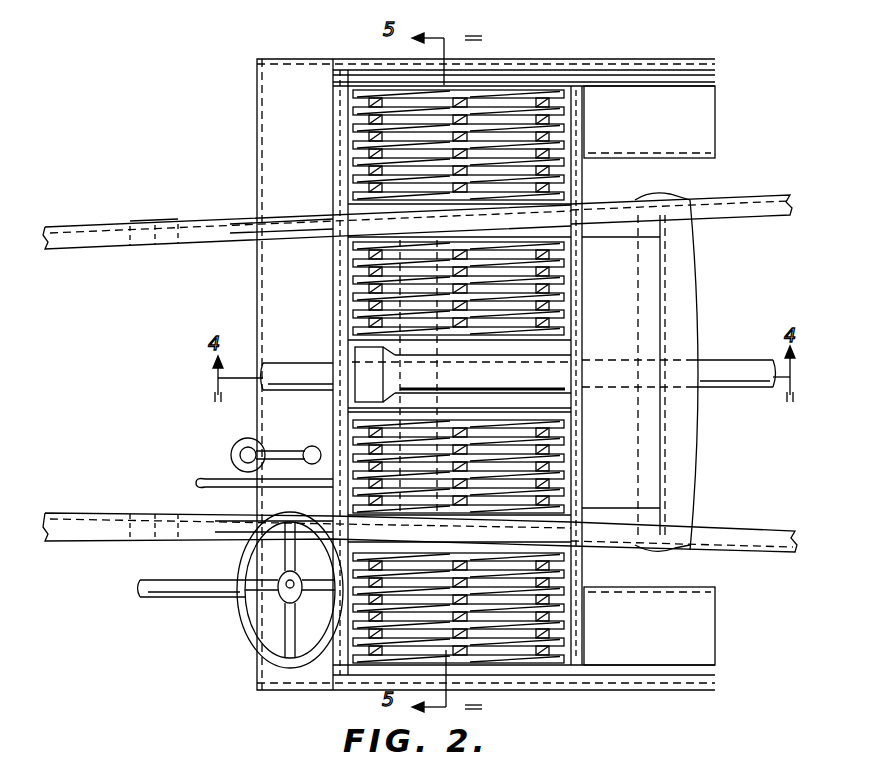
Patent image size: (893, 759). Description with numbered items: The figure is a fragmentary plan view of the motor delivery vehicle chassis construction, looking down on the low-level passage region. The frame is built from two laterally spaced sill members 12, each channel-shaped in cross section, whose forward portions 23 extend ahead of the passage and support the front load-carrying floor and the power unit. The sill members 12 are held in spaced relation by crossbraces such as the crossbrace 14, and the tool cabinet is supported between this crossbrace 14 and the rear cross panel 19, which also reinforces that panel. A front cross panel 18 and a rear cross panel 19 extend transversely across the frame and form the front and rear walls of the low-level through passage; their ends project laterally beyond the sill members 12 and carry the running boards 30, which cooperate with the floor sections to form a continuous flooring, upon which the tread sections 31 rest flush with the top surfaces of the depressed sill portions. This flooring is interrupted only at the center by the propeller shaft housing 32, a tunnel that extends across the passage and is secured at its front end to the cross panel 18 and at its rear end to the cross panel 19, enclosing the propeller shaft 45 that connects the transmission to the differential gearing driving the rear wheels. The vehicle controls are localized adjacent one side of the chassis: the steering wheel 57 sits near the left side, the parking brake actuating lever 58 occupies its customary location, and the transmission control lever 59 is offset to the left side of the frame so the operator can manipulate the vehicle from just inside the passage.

The sill members 12 is at (728, 197).
The crossbrace 14 is at (680, 316).
The front cross panel 18 is at (332, 284).
The rear cross panel 19 is at (575, 284).
The front portions of sill members 23 is at (88, 226).
The running boards 30 is at (700, 118).
The tread sections 31 is at (563, 197).
The propeller shaft housing 32 is at (485, 376).
The propeller shaft 45 is at (712, 360).
The steering wheel 57 is at (250, 640).
The parking brake actuating lever 58 is at (205, 478).
The transmission control lever 59 is at (315, 446).